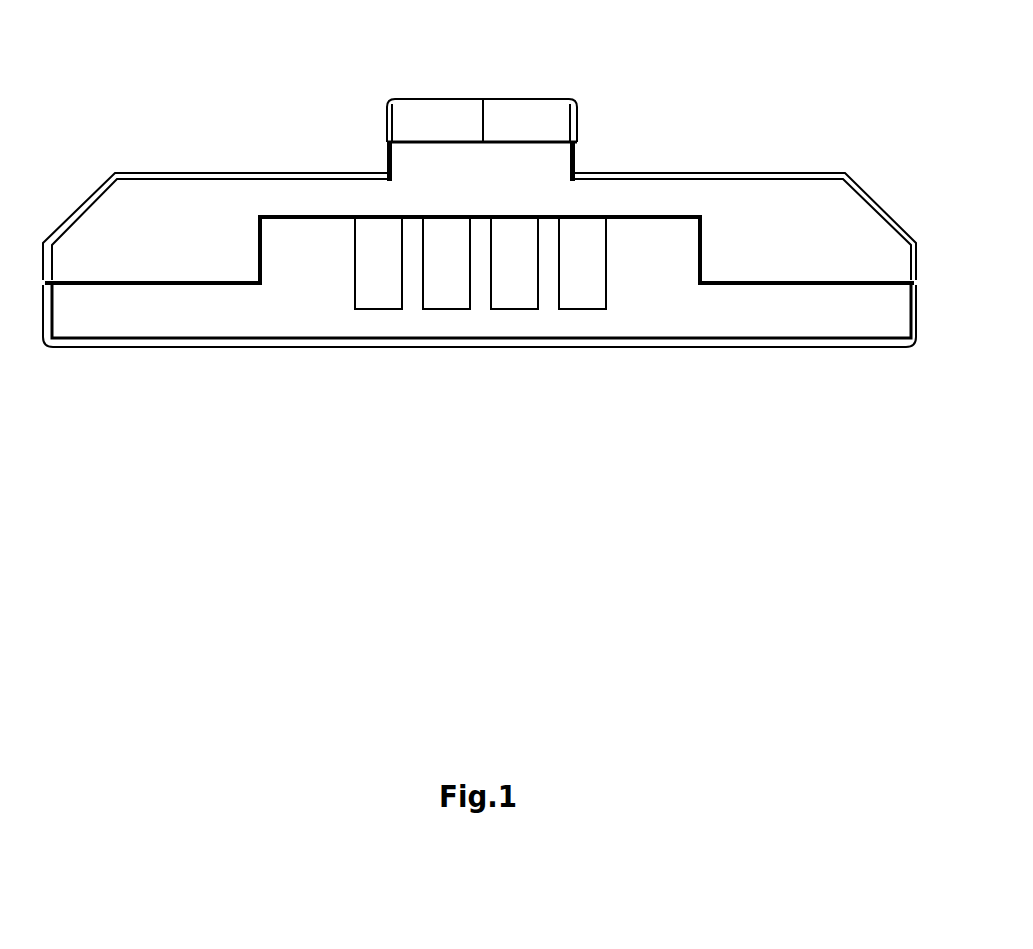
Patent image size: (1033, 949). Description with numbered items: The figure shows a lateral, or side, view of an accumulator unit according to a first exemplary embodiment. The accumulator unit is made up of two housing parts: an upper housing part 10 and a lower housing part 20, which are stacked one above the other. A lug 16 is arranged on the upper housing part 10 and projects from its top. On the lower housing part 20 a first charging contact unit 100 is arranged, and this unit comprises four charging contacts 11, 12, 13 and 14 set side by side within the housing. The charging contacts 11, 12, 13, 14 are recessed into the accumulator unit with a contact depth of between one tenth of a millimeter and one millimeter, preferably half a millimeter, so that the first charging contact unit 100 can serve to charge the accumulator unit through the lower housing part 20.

The upper housing part 10 is at (850, 218).
The lower housing part 20 is at (823, 325).
The lug 16 is at (553, 113).
The charging contact 11 is at (373, 298).
The charging contact 12 is at (442, 298).
The charging contact 13 is at (513, 298).
The charging contact 14 is at (608, 325).
The first charging contact unit 100 is at (479, 380).